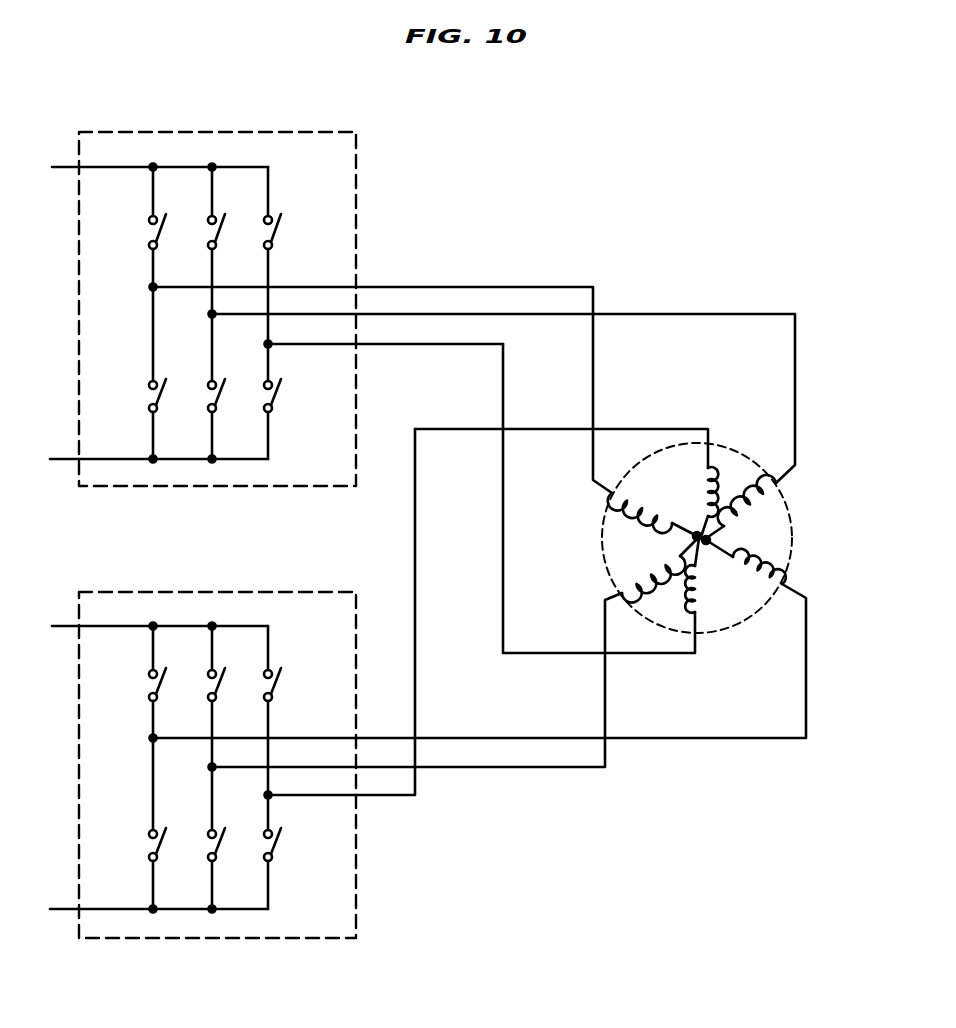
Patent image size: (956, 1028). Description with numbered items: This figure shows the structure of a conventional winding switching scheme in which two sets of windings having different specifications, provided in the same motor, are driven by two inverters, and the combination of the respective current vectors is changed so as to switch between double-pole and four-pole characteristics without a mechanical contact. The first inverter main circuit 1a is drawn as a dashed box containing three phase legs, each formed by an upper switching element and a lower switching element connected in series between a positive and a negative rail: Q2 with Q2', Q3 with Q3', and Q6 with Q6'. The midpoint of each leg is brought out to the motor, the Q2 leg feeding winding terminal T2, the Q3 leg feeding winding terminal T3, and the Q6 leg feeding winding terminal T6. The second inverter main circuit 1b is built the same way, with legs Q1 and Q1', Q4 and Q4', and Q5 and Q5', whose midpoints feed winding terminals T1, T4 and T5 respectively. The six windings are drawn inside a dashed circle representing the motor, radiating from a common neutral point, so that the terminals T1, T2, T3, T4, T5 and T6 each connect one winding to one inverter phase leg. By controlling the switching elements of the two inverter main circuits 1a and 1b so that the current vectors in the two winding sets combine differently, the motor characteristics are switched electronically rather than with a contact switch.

The inverter main circuit 1a is at (203, 284).
The inverter main circuit 1b is at (203, 740).
The switching element Q1 is at (141, 682).
The switching element Q2 is at (141, 227).
The switching element Q3 is at (200, 240).
The switching element Q4 is at (200, 696).
The switching element Q5 is at (256, 710).
The switching element Q6 is at (256, 255).
The switching element Q1' is at (138, 823).
The switching element Q2' is at (138, 373).
The switching element Q3' is at (197, 386).
The switching element Q4' is at (197, 838).
The switching element Q5' is at (253, 852).
The switching element Q6' is at (253, 401).
The winding terminal T1 is at (490, 639).
The winding terminal T2 is at (425, 411).
The winding terminal T3 is at (519, 426).
The winding terminal T4 is at (455, 652).
The winding terminal T5 is at (497, 599).
The winding terminal T6 is at (497, 505).